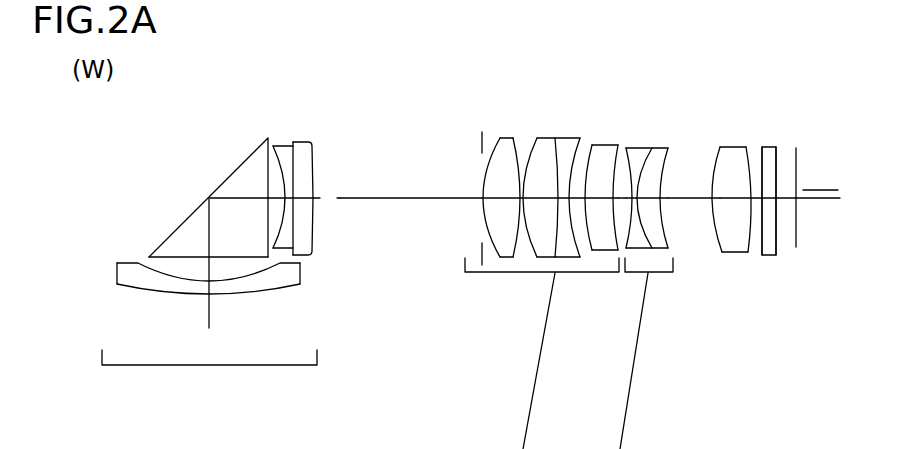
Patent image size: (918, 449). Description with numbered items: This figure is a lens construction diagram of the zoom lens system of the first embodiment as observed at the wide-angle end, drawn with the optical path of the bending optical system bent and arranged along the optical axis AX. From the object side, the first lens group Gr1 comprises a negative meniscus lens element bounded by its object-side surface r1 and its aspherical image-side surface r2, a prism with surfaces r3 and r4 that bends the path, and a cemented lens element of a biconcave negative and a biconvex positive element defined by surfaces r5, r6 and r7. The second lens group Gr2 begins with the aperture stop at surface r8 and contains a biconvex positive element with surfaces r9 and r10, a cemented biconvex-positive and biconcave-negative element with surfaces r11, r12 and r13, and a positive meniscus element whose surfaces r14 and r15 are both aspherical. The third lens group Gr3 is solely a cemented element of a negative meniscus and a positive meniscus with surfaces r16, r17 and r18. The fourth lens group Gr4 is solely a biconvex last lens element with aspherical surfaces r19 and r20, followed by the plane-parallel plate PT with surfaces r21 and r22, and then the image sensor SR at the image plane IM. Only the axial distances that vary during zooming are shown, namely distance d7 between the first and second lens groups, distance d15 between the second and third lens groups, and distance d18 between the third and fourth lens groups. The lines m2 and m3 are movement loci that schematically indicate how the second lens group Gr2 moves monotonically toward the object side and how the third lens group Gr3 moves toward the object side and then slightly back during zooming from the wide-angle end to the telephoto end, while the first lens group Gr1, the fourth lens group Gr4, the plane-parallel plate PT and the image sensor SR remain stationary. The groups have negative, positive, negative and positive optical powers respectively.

The first surface r1 is at (148, 290).
The second surface r2 is at (183, 294).
The third surface r3 is at (177, 256).
The fourth surface r4 is at (267, 167).
The fifth surface r5 is at (288, 210).
The sixth surface r6 is at (292, 233).
The seventh surface r7 is at (310, 249).
The eighth surface r8 is at (482, 246).
The ninth surface r9 is at (484, 190).
The tenth surface r10 is at (520, 173).
The eleventh surface r11 is at (534, 150).
The twelfth surface r12 is at (553, 148).
The thirteenth surface r13 is at (570, 150).
The fourteenth surface r14 is at (600, 150).
The fifteenth surface r15 is at (616, 148).
The sixteenth surface r16 is at (636, 148).
The seventeenth surface r17 is at (656, 148).
The eighteenth surface r18 is at (668, 148).
The nineteenth surface r19 is at (715, 150).
The twentieth surface r20 is at (750, 148).
The twenty-first surface r21 is at (763, 147).
The twenty-second surface r22 is at (776, 148).
The seventh axial distance d7 is at (411, 183).
The fifteenth axial distance d15 is at (627, 208).
The eighteenth axial distance d18 is at (693, 184).
The first lens group Gr1 is at (209, 297).
The second lens group Gr2 is at (542, 221).
The third lens group Gr3 is at (662, 226).
The fourth lens group Gr4 is at (730, 253).
The movement locus of second lens group m2 is at (528, 413).
The movement locus of third lens group m3 is at (625, 413).
The plane-parallel plate PT is at (768, 255).
The image sensor SR is at (820, 179).
The optical axis AX is at (827, 203).
The image plane IM is at (797, 247).